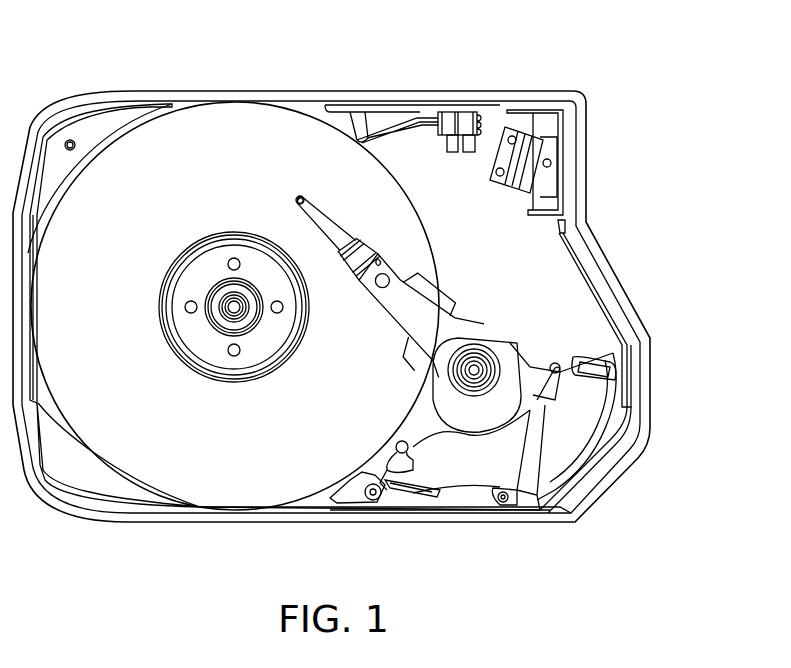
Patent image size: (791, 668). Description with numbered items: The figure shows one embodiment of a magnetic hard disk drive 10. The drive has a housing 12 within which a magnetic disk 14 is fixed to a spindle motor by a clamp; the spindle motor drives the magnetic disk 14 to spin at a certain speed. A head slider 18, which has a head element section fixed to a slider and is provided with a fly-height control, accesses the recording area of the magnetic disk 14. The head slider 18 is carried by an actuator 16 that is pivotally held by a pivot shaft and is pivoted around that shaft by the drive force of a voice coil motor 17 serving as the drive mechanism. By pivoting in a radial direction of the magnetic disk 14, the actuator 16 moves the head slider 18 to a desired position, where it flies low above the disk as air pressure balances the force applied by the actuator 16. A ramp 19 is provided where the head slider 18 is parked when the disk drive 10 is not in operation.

The magnetic hard disk drive 10 is at (310, 78).
The housing 12 is at (583, 147).
The magnetic disk 14 is at (193, 135).
The actuator 16 is at (481, 291).
The voice coil motor 17 is at (537, 443).
The head slider 18 is at (293, 201).
The ramp 19 is at (436, 108).